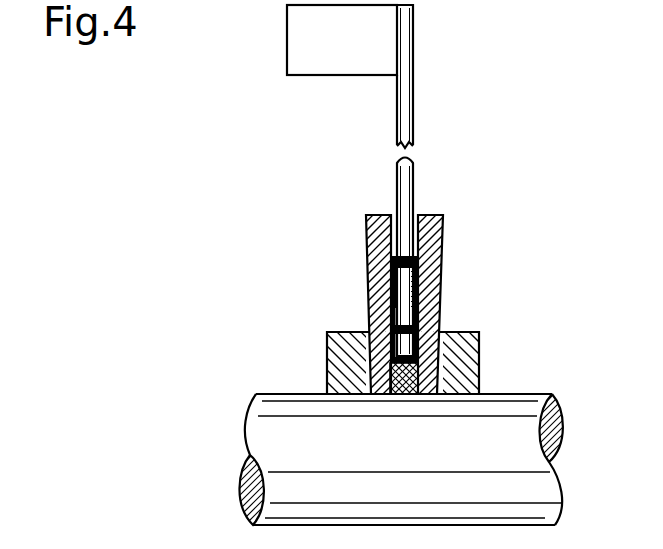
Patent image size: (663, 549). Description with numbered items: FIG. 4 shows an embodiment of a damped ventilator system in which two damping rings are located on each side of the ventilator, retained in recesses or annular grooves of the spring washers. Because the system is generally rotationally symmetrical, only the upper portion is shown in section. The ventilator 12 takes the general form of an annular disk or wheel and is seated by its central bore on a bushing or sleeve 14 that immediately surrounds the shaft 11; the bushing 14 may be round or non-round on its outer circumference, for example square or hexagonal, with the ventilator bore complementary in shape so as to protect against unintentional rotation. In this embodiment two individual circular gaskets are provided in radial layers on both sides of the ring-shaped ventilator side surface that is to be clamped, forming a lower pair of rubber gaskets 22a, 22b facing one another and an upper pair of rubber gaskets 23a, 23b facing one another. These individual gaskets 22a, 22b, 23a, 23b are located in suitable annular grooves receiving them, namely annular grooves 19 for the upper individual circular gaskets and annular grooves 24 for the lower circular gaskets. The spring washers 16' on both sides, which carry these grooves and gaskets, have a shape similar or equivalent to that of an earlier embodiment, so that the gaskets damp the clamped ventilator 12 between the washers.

The shaft 11 is at (507, 415).
The ventilator 12 is at (403, 170).
The bushing 14 is at (408, 380).
The spring washers 16' is at (400, 279).
The annular grooves 19 is at (387, 272).
The rubber gasket 22a is at (392, 331).
The rubber gasket 22b is at (426, 331).
The rubber gasket 23a is at (376, 268).
The rubber gasket 23b is at (446, 260).
The annular grooves 24 is at (380, 360).